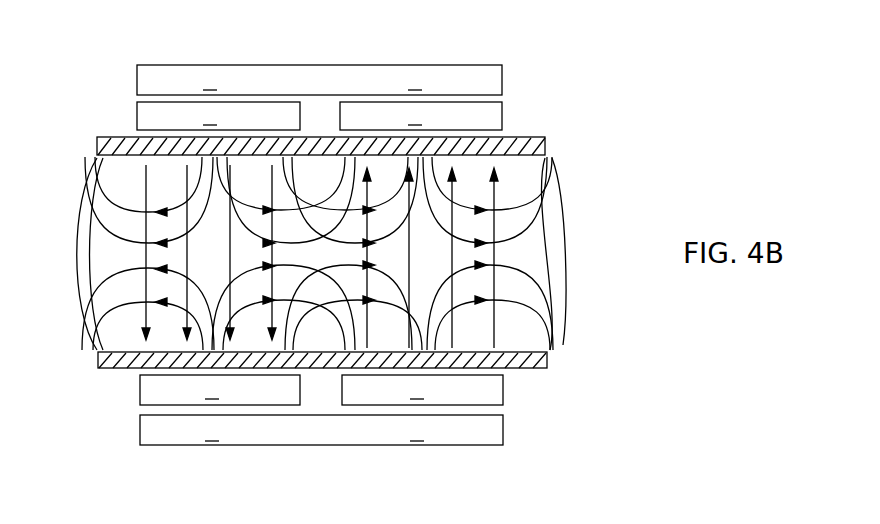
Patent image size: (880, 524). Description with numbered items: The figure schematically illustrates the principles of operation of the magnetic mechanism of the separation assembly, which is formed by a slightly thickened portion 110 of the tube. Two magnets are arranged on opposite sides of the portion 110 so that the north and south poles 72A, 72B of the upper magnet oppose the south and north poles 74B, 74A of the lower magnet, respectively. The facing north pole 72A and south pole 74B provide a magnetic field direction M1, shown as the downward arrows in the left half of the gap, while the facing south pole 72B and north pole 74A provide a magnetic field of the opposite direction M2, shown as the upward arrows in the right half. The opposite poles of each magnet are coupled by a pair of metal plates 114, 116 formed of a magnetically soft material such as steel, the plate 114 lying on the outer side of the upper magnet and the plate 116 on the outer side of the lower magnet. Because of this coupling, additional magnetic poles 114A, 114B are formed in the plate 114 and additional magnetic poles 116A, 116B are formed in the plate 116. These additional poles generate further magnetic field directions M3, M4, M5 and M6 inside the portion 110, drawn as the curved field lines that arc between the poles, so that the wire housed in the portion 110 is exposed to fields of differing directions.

The portion of the tube 110 is at (117, 140).
The metal plate 114 is at (317, 83).
The additional magnetic pole 114A is at (185, 80).
The additional magnetic pole 114B is at (430, 80).
The north pole of the magnet 72A is at (227, 117).
The south pole of the magnet 72B is at (408, 118).
The north pole of the magnet 74A is at (437, 388).
The south pole of the magnet 74B is at (150, 383).
The metal plate 116 is at (325, 417).
The additional magnetic pole 116A is at (440, 428).
The additional magnetic pole 116B is at (243, 433).
The magnetic field direction M1 is at (103, 268).
The magnetic field direction M2 is at (500, 270).
The magnetic field direction M3 is at (107, 190).
The magnetic field direction M4 is at (553, 180).
The magnetic field direction M5 is at (97, 348).
The magnetic field direction M6 is at (535, 312).